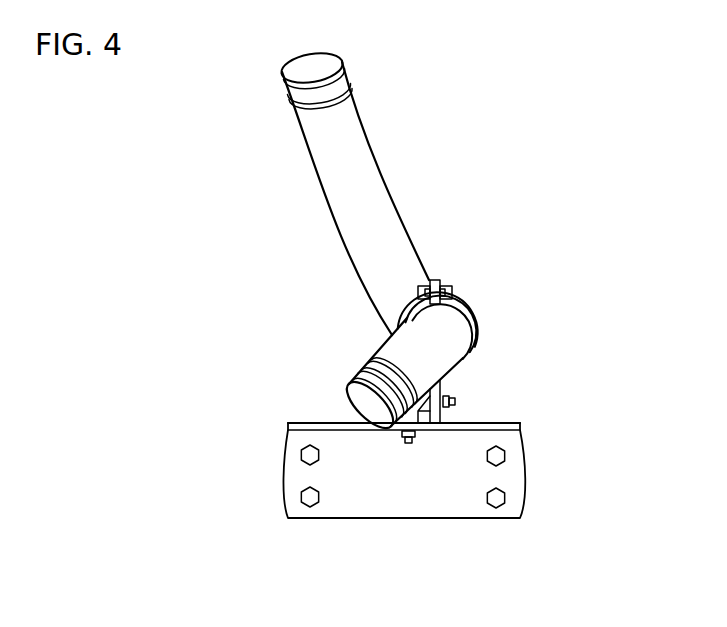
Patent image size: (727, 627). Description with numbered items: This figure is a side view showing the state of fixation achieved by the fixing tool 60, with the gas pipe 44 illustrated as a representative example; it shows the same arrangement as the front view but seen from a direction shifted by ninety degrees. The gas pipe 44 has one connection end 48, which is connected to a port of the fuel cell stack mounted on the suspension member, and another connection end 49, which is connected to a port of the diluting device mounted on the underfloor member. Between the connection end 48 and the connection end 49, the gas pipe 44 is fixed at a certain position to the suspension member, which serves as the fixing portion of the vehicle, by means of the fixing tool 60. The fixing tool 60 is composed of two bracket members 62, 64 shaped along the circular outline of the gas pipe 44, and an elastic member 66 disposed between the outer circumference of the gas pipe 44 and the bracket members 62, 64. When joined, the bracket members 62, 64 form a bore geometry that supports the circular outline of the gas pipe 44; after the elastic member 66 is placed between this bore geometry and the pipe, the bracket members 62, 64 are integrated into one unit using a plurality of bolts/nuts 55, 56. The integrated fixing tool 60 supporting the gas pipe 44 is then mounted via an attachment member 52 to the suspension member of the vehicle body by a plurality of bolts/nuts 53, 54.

The gas pipe 44 is at (377, 193).
The connection end 48 is at (338, 78).
The connection end 49 is at (381, 371).
The attachment member 52 is at (457, 507).
The bolts/nuts 53 is at (309, 444).
The bolts/nuts 54 is at (408, 443).
The bolts/nuts 55 is at (496, 401).
The bolts/nuts 56 is at (448, 283).
The fixing tool 60 is at (453, 322).
The bracket member 62 is at (407, 316).
The bracket member 64 is at (473, 323).
The elastic member 66 is at (471, 357).